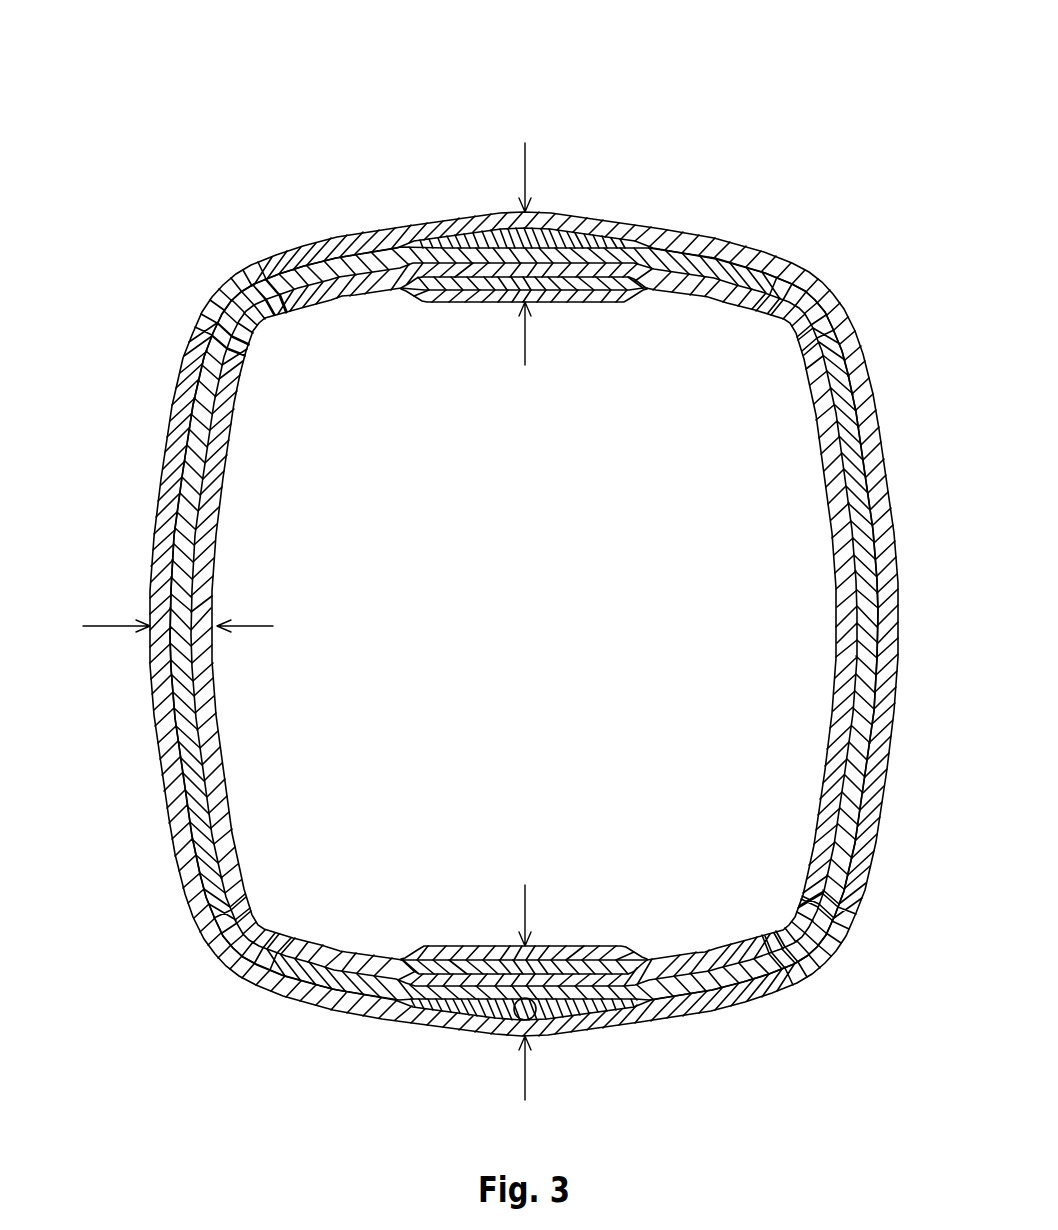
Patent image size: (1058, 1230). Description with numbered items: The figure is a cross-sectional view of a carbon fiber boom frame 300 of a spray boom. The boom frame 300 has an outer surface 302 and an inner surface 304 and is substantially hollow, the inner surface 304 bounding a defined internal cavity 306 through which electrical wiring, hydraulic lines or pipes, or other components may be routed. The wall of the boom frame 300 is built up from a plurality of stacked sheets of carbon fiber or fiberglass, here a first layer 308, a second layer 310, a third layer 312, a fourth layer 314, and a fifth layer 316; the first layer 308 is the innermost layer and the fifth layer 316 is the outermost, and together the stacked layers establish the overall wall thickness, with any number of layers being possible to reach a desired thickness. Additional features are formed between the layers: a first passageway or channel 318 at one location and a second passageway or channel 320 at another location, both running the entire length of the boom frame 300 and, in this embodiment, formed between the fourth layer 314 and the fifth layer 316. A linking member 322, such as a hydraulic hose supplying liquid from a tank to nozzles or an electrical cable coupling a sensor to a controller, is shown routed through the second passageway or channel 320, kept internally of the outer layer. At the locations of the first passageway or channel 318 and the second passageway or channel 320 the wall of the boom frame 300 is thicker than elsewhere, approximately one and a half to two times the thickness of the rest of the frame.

The boom frame 300 is at (280, 131).
The outer surface 302 is at (626, 218).
The inner surface 304 is at (346, 303).
The internal cavity 306 is at (560, 626).
The first layer 308 is at (838, 602).
The second layer 310 is at (845, 492).
The third layer 312 is at (858, 560).
The fourth layer 314 is at (877, 524).
The fifth layer 316 is at (880, 464).
The first passageway or channel 318 is at (468, 232).
The second passageway or channel 320 is at (573, 1012).
The linking member 322 is at (517, 1016).